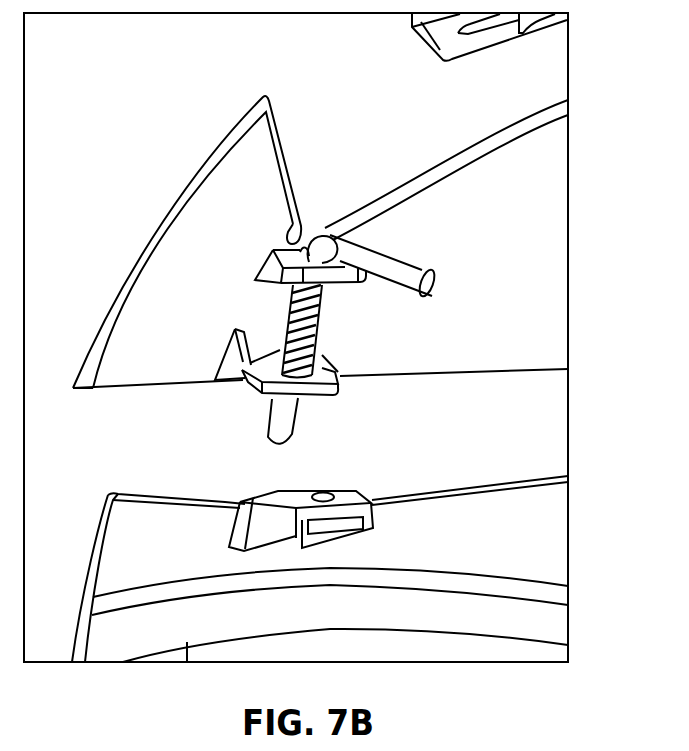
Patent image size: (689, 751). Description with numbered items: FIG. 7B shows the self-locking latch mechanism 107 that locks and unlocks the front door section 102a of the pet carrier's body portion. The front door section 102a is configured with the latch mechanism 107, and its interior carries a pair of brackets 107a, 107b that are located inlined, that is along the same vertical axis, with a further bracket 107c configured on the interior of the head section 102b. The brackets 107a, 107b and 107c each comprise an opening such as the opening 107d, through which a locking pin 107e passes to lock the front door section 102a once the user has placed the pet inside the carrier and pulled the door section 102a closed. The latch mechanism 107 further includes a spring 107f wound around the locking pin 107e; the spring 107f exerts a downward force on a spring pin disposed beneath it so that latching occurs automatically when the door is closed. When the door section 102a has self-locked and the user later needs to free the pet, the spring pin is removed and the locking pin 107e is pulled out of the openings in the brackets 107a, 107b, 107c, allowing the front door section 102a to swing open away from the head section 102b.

The front door section 102a is at (546, 292).
The head section 102b is at (557, 528).
The self-locking latch mechanism 107 is at (313, 243).
The bracket 107a is at (280, 250).
The bracket 107b is at (335, 355).
The bracket 107c is at (363, 499).
The opening 107d is at (328, 494).
The locking pin 107e is at (369, 253).
The spring 107f is at (242, 373).